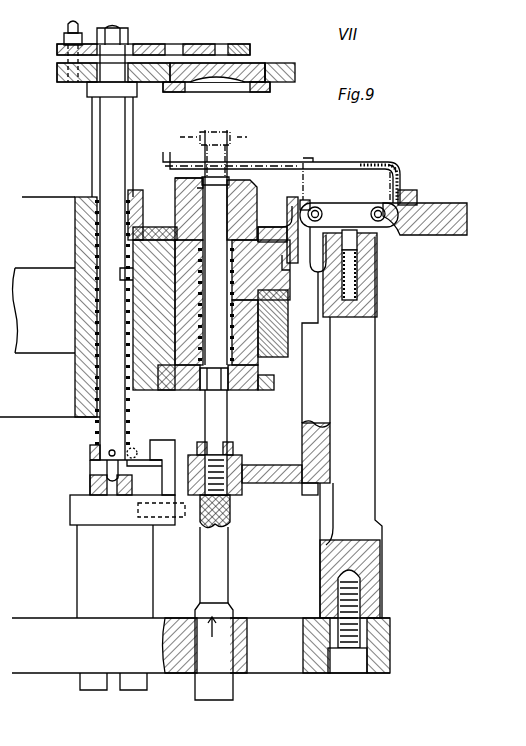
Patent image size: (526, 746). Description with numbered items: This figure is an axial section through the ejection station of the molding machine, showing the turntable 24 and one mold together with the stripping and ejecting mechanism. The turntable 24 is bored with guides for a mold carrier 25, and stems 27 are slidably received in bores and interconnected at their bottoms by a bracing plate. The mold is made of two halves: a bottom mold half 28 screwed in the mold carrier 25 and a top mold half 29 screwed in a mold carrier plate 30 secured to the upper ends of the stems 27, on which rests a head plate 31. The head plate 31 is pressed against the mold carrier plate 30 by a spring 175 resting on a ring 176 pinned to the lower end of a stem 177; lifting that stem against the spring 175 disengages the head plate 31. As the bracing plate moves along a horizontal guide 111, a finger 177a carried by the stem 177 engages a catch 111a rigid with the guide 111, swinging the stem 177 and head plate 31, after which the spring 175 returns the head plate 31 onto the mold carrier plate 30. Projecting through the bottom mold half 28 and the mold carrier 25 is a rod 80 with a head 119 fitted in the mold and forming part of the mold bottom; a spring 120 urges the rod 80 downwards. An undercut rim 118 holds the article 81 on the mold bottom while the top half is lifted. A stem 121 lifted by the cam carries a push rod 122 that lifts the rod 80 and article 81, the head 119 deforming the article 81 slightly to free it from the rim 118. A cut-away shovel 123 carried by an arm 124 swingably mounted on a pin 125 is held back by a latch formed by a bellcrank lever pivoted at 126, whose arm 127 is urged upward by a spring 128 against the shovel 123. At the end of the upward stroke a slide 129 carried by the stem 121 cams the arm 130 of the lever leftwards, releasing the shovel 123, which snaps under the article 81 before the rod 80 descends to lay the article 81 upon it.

The turntable 24 is at (272, 335).
The mold carrier 25 is at (258, 274).
The stem 27 is at (90, 485).
The bottom mold half 28 is at (247, 196).
The top mold half 29 is at (256, 64).
The mold carrier plate 30 is at (292, 70).
The head plate 31 is at (236, 44).
The rod 80 is at (213, 218).
The article 81 is at (245, 136).
The horizontal guide 111 is at (85, 505).
The catch 111a is at (168, 440).
The undercut rim 118 is at (178, 181).
The head 119 is at (222, 181).
The spring 120 is at (240, 376).
The stem 121 is at (222, 590).
The push rod 122 is at (218, 428).
The shovel 123 is at (283, 162).
The arm 124 is at (414, 198).
The pin 125 is at (399, 170).
The pivot 126 is at (316, 202).
The latch arm 127 is at (338, 220).
The spring 128 is at (360, 272).
The slide 129 is at (312, 376).
The arm of the bell-crank lever 130 is at (310, 244).
The spring 175 is at (97, 320).
The ring 176 is at (88, 453).
The stem 177 is at (112, 140).
The finger 177a is at (142, 455).